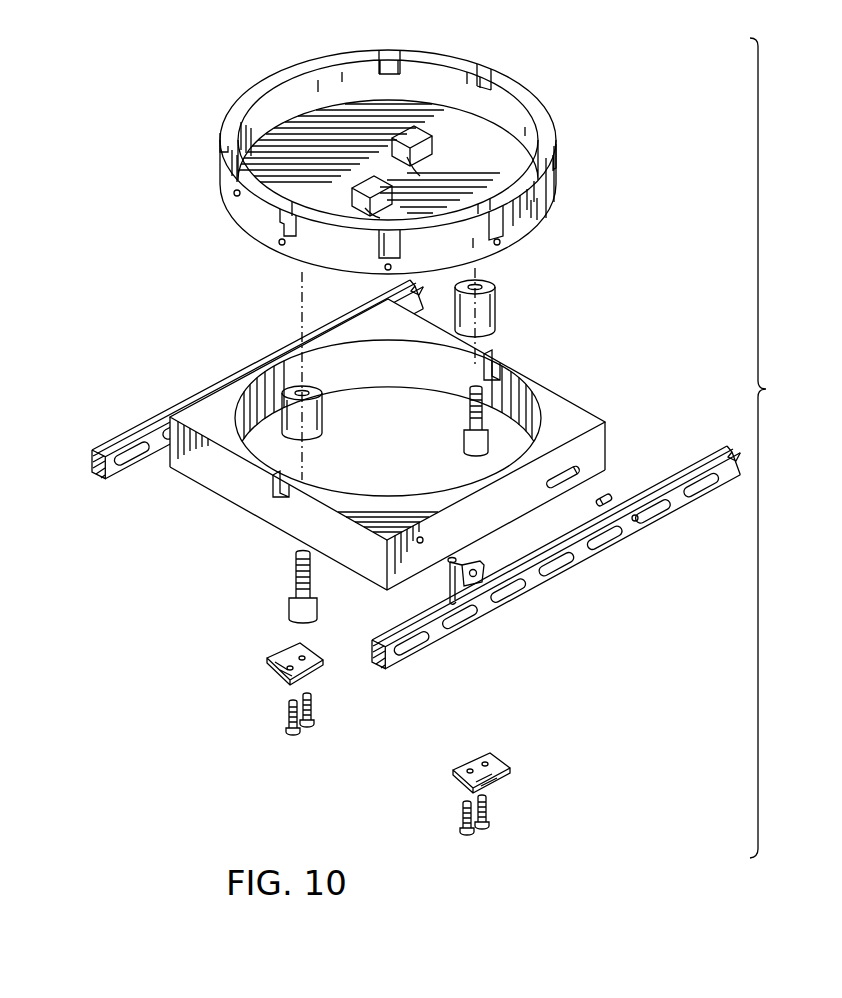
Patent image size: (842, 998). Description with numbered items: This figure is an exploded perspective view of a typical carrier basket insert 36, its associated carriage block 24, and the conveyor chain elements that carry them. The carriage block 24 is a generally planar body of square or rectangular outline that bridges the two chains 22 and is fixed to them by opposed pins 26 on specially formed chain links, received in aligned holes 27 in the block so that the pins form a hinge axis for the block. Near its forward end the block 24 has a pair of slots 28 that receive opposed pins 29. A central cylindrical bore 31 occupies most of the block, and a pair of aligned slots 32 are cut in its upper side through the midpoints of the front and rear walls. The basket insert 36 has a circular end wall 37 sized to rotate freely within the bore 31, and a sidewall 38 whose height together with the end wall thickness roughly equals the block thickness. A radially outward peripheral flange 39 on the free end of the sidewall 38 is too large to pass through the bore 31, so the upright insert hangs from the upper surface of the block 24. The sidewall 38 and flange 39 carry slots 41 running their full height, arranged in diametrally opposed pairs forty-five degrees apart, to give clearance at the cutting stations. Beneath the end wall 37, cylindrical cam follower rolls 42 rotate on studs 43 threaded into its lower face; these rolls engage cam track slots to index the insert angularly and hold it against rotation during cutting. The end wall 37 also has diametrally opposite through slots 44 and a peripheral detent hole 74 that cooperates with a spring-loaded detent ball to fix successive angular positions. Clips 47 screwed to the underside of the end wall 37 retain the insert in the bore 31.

The chain 22 is at (122, 446).
The carriage block 24 is at (582, 402).
The pin 26 is at (449, 585).
The hole 27 is at (422, 545).
The slot 28 is at (567, 487).
The pin 29 is at (610, 500).
The cylindrical bore 31 is at (530, 383).
The slot 32 is at (488, 362).
The carrier basket insert 36 is at (538, 98).
The end wall 37 is at (440, 117).
The sidewall 38 is at (530, 208).
The peripheral flange 39 is at (553, 166).
The slot 41 is at (393, 68).
The cam follower roll 42 is at (487, 313).
The stud 43 is at (467, 427).
The slot 44 is at (400, 160).
The clip 47 is at (272, 660).
The detent hole 74 is at (234, 197).